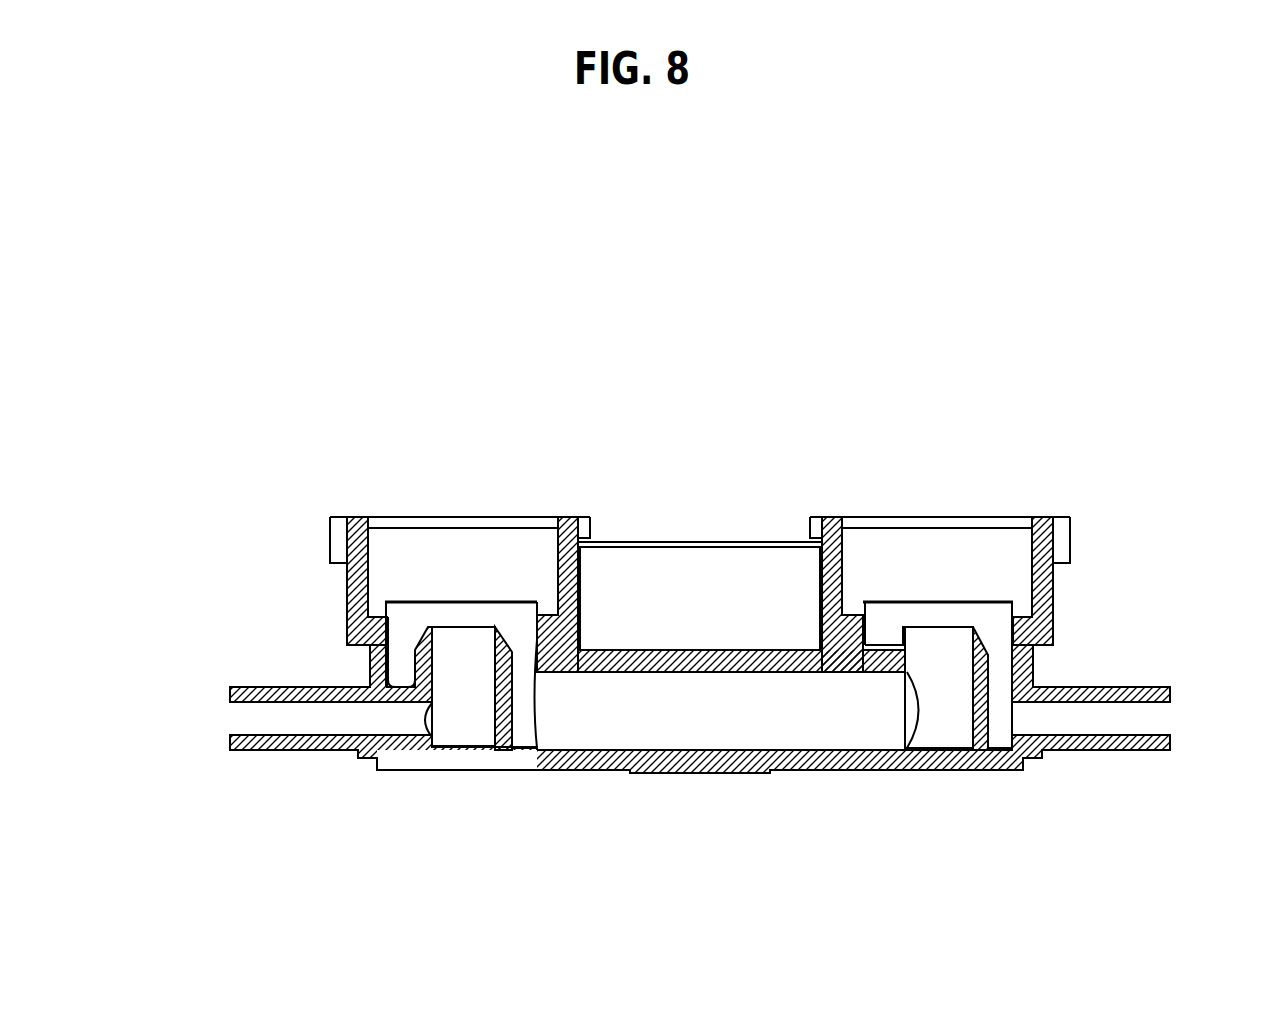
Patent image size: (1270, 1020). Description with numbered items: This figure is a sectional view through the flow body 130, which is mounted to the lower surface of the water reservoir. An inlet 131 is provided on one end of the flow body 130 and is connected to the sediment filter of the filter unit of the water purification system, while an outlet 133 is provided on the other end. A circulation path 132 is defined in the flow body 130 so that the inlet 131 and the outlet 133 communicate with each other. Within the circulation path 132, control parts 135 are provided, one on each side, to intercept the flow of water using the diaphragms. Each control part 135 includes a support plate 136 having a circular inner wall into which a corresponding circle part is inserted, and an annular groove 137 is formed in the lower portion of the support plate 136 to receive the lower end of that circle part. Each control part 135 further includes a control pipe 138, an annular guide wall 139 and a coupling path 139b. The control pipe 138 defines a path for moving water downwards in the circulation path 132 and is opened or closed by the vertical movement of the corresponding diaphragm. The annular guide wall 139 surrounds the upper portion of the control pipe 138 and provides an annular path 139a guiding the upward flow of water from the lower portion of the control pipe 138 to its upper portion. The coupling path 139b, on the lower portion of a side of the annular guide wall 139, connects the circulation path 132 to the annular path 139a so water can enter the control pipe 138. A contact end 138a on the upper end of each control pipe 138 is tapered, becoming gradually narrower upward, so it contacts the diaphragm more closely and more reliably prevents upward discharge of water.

The flow body 130 is at (695, 329).
The inlet 131 is at (258, 687).
The circulation path 132 is at (708, 718).
The outlet 133 is at (1143, 687).
The control part 135 is at (328, 584).
The support plate 136 is at (338, 560).
The annular groove 137 is at (370, 615).
The control pipe 138 is at (545, 600).
The contact end 138a is at (537, 625).
The annular guide wall 139 is at (407, 641).
The annular path 139a is at (508, 638).
The coupling path 139b is at (521, 676).